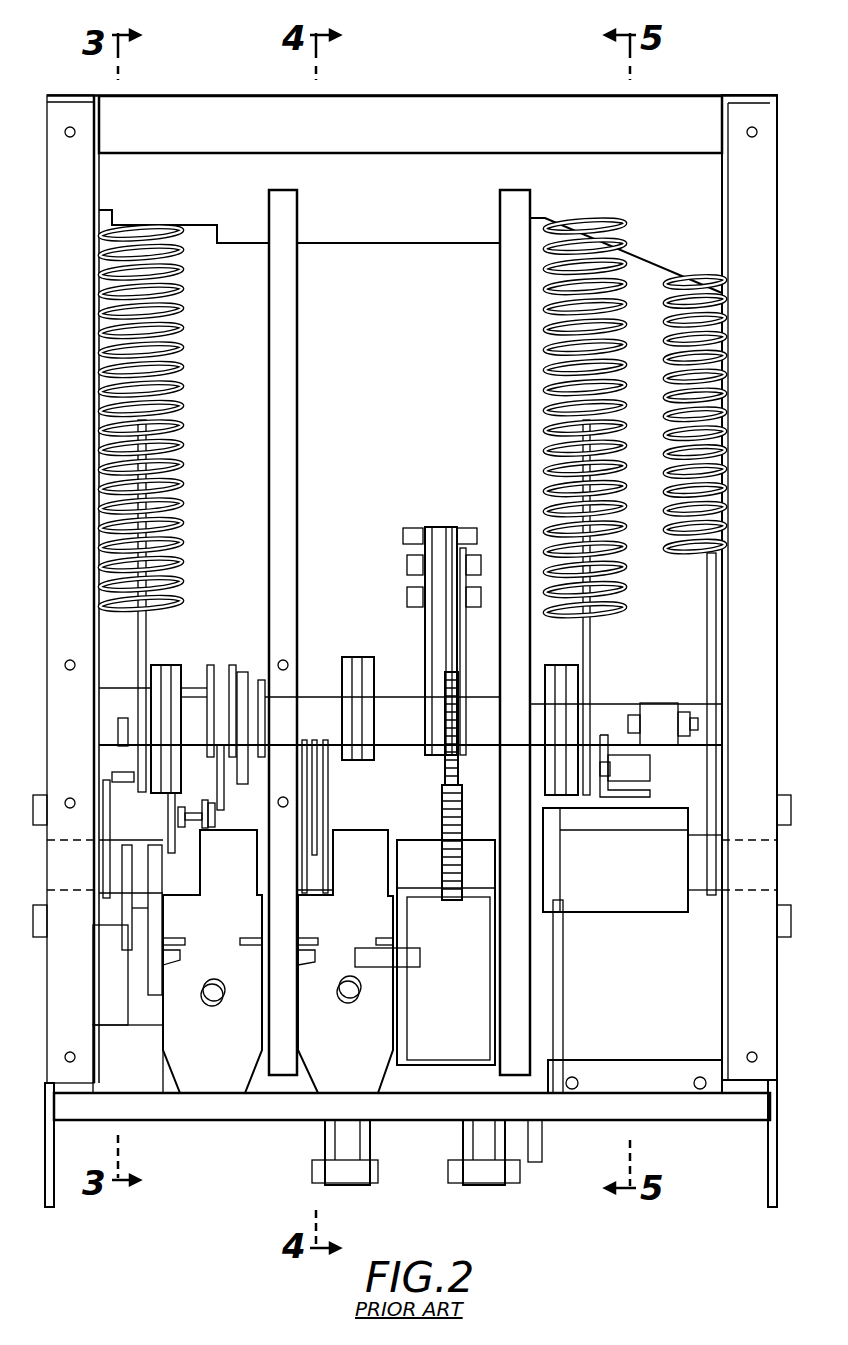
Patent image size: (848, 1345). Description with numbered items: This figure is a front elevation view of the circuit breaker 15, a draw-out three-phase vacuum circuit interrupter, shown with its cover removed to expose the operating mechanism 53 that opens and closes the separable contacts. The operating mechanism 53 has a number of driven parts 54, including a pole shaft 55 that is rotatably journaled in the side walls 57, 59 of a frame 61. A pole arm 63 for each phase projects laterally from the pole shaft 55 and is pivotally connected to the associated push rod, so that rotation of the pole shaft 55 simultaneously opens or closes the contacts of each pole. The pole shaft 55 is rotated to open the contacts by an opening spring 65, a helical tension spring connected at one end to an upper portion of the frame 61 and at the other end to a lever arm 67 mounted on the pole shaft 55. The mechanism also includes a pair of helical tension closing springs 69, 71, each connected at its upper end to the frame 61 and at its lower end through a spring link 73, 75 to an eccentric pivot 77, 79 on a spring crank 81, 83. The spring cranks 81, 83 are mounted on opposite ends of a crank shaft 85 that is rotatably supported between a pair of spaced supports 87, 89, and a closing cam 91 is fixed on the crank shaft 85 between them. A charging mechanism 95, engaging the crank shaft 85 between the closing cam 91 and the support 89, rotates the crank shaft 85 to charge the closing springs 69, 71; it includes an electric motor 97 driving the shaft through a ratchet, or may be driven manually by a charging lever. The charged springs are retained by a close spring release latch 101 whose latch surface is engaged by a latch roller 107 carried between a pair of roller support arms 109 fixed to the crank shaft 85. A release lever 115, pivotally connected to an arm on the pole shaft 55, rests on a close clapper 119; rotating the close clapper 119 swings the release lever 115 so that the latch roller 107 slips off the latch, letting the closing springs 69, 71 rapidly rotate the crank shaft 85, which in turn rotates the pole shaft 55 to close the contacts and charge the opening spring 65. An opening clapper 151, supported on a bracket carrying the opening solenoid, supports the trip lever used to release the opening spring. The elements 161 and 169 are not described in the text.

The circuit breaker 15 is at (735, 62).
The operating mechanism 53 is at (425, 765).
The driven parts 54 is at (85, 728).
The pole shaft 55 is at (692, 900).
The side wall 57 is at (50, 390).
The side wall 59 is at (768, 383).
The frame 61 is at (500, 100).
The pole arm 63 is at (495, 1185).
The opening spring 65 is at (725, 308).
The lever arm 67 is at (709, 660).
The closing spring 69 is at (178, 322).
The closing spring 71 is at (548, 318).
The spring link 73 is at (138, 632).
The spring link 75 is at (590, 640).
The eccentric pivot 77 is at (125, 776).
The eccentric pivot 79 is at (597, 782).
The spring crank 81 is at (165, 665).
The spring crank 83 is at (560, 680).
The crank shaft 85 is at (318, 712).
The support 87 is at (297, 390).
The support 89 is at (500, 390).
The closing cam 91 is at (358, 657).
The charging mechanism 95 is at (482, 528).
The electric motor 97 is at (586, 912).
The close spring release latch 101 is at (222, 800).
The latch roller 107 is at (215, 690).
The roller support arms 109 is at (233, 665).
The release lever 115 is at (210, 830).
The close clapper 119 is at (200, 1080).
The opening clapper 151 is at (317, 1078).
The terminal 161 is at (350, 1185).
The top plate 169 is at (392, 96).